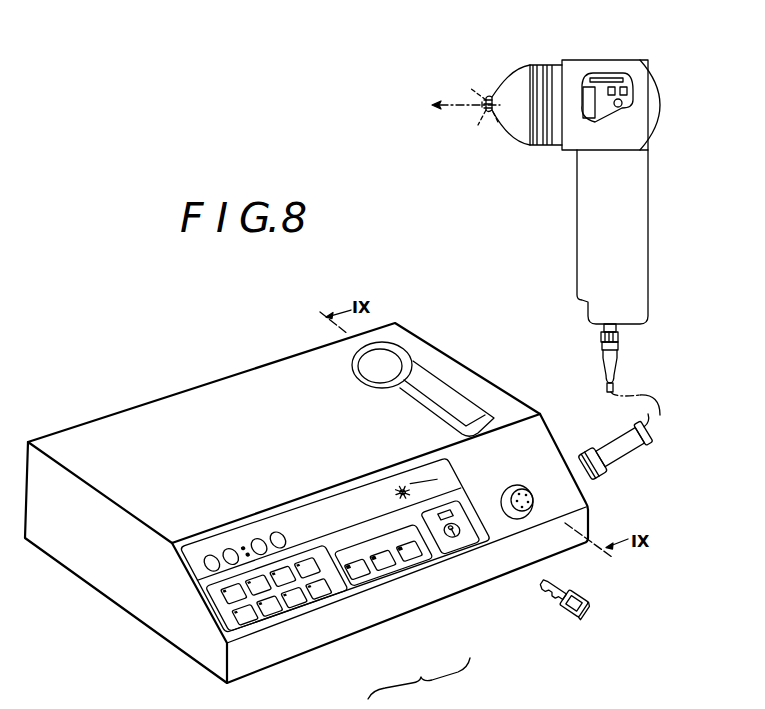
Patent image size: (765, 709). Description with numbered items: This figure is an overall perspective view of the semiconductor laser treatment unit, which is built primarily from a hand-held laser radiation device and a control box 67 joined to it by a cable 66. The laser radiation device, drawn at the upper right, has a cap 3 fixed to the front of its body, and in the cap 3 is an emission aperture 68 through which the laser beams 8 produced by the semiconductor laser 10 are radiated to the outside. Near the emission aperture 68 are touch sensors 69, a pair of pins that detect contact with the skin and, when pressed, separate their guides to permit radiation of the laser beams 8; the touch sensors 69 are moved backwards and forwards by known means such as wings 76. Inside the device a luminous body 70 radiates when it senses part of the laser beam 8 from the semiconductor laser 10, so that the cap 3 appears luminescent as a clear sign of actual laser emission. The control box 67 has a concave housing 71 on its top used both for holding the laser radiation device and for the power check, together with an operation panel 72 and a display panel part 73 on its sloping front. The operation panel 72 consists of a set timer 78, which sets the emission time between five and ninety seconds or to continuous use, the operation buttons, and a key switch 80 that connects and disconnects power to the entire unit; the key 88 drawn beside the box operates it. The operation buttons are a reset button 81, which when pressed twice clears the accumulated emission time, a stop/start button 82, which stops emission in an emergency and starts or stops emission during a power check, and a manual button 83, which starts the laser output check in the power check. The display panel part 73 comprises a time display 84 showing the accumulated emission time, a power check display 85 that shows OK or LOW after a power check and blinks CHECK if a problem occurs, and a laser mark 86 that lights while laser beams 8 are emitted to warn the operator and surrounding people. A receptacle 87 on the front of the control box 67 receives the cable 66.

The cap 3 is at (514, 92).
The laser beams 8 is at (446, 102).
The semiconductor laser 10 is at (617, 75).
The cable 66 is at (648, 392).
The control box 67 is at (428, 287).
The emission aperture 68 is at (486, 110).
The touch sensors 69 is at (498, 122).
The luminous body 70 is at (623, 108).
The concave housing 71 is at (440, 407).
The operation panel 72 is at (217, 606).
The display panel part 73 is at (198, 569).
The wings 76 is at (470, 88).
The set timer 78 is at (300, 603).
The key switch 80 is at (453, 537).
The reset button 81 is at (363, 573).
The stop/start button 82 is at (387, 577).
The manual button 83 is at (420, 573).
The time display 84 is at (237, 545).
The power check display 85 is at (335, 532).
The laser mark 86 is at (398, 486).
The receptacle 87 is at (537, 489).
The key 88 is at (588, 611).